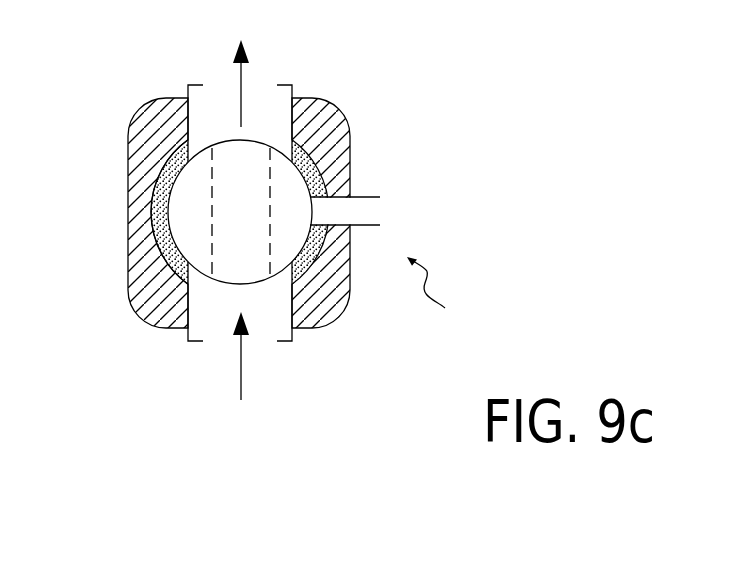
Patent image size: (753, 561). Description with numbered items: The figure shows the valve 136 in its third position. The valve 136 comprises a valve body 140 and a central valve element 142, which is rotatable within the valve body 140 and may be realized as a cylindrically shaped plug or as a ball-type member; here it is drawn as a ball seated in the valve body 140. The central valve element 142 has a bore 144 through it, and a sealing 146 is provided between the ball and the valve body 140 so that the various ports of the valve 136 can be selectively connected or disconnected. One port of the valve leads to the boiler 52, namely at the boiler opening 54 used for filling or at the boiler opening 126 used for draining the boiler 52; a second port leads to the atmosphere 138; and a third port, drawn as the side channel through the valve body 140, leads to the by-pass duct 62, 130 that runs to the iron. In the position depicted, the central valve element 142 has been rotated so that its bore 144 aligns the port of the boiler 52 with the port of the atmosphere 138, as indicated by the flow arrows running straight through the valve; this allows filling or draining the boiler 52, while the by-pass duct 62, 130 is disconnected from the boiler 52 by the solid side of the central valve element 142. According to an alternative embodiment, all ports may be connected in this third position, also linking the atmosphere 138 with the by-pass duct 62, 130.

The atmosphere 138 is at (221, 30).
The boiler 52 is at (228, 433).
The by-pass duct 62 is at (382, 174).
The by-pass duct 130 is at (370, 196).
The boiler opening 54 is at (269, 243).
The boiler opening 126 is at (279, 329).
The valve 136 is at (447, 295).
The valve body 140 is at (143, 273).
The central valve element 142 is at (200, 178).
The bore 144 is at (228, 217).
The sealing 146 is at (148, 200).